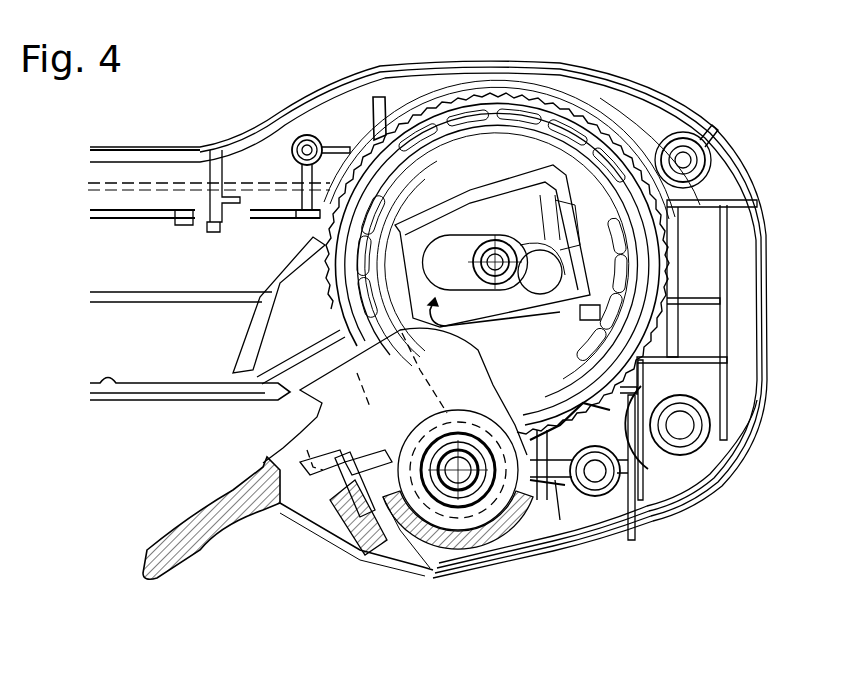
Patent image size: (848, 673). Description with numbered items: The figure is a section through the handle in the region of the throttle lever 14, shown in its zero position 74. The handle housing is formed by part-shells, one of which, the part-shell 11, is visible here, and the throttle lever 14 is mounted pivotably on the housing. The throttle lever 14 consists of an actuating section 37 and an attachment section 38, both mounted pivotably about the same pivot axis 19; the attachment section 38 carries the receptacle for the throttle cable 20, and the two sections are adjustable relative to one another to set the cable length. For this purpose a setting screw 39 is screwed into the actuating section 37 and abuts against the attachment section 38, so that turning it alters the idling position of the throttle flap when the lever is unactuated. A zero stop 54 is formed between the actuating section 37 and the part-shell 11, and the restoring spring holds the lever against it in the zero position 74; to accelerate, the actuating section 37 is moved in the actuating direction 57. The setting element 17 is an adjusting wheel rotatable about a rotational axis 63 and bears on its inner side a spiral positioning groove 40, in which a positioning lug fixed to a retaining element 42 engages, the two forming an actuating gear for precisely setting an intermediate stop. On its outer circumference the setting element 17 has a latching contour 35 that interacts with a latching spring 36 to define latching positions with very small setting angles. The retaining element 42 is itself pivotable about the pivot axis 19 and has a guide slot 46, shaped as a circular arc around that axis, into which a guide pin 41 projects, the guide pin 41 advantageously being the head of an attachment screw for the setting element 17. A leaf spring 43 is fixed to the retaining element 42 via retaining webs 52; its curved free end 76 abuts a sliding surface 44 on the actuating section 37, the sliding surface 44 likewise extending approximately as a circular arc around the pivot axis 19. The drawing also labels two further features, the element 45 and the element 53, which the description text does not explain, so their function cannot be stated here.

The part-shell 11 is at (672, 100).
The throttle lever 14 is at (312, 540).
The setting element 17 is at (604, 133).
The pivot axis 19 is at (457, 470).
The throttle cable 20 is at (137, 183).
The latching contour 35 is at (619, 389).
The latching spring 36 is at (607, 458).
The actuating section 37 is at (267, 507).
The attachment section 38 is at (373, 350).
The setting screw 39 is at (367, 500).
The positioning groove 40 is at (538, 152).
The guide pin 41 is at (487, 250).
The retaining element 42 is at (587, 290).
The spring 43 is at (539, 323).
The sliding surface 44 is at (300, 140).
The guide strut 45 is at (300, 363).
The guide slot 46 is at (446, 233).
The retaining webs 52 is at (563, 220).
The screw 53 is at (581, 493).
The zero stop 54 is at (425, 582).
The actuating direction 57 is at (85, 470).
The rotational axis 63 is at (745, 209).
The zero position 74 is at (224, 553).
The free end 76 is at (404, 210).